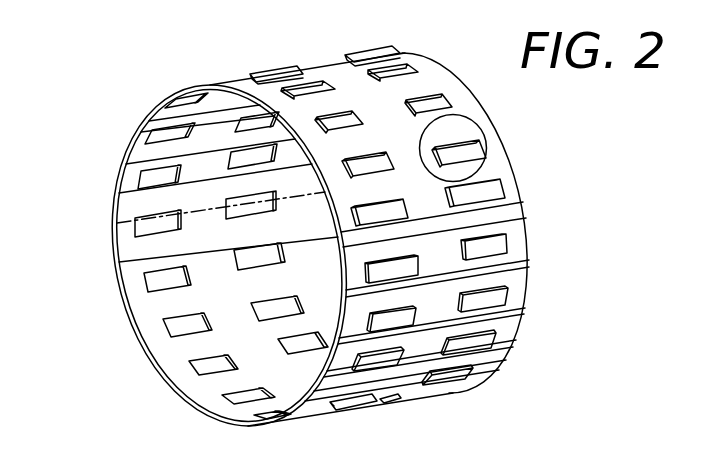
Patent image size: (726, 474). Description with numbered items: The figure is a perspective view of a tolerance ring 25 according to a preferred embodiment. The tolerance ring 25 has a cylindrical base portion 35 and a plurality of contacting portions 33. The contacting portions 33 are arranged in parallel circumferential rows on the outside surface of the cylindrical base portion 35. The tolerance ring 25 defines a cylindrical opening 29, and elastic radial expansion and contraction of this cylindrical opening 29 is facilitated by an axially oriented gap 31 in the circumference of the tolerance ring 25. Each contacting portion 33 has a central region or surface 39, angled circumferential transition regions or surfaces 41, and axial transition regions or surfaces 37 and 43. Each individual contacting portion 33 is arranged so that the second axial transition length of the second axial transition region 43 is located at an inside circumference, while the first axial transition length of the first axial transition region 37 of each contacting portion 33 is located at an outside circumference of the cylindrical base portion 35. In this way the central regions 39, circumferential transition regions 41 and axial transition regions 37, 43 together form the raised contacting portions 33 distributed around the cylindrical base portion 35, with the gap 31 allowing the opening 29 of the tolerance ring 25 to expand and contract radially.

The tolerance ring 25 is at (192, 432).
The cylindrical opening 29 is at (207, 293).
The axially oriented gap 31 is at (463, 78).
The contacting portions 33 is at (270, 57).
The cylindrical base portion 35 is at (480, 119).
The first axial transition region 37 is at (493, 196).
The central region 39 is at (503, 237).
The angled circumferential transition region 41 is at (420, 141).
The second axial transition region 43 is at (447, 204).